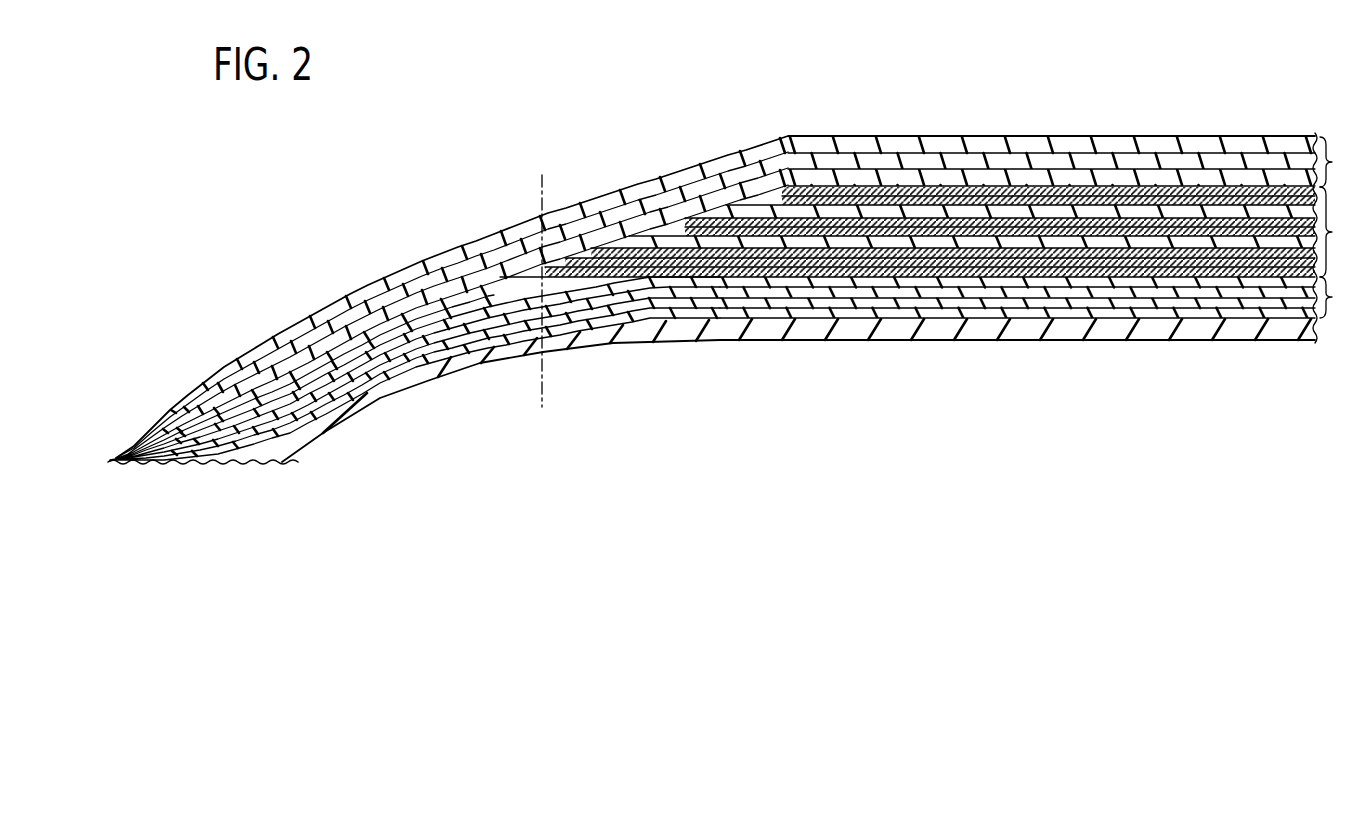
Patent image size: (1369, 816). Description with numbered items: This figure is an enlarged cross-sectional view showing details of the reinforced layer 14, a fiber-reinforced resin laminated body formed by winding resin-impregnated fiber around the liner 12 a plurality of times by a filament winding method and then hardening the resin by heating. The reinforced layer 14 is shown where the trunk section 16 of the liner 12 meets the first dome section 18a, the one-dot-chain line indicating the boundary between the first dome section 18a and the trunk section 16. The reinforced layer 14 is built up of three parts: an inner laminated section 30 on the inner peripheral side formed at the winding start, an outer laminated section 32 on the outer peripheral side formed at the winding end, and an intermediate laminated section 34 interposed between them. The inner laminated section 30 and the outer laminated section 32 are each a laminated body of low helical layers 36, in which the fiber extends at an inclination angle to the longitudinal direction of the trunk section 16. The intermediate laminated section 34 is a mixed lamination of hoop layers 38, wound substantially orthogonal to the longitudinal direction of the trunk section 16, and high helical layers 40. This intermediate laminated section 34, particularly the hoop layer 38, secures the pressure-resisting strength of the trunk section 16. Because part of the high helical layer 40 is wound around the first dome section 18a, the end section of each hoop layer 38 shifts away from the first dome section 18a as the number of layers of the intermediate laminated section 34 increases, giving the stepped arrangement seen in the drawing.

The liner 12 is at (812, 350).
The reinforced layer 14 is at (831, 126).
The trunk section 16 is at (702, 330).
The first dome section 18a is at (392, 390).
The inner laminated section 30 is at (1041, 297).
The outer laminated section 32 is at (1075, 162).
The intermediate laminated section 34 is at (931, 241).
The low helical layer 36 is at (1083, 185).
The hoop layer 38 is at (1180, 203).
The high helical layer 40 is at (1243, 210).